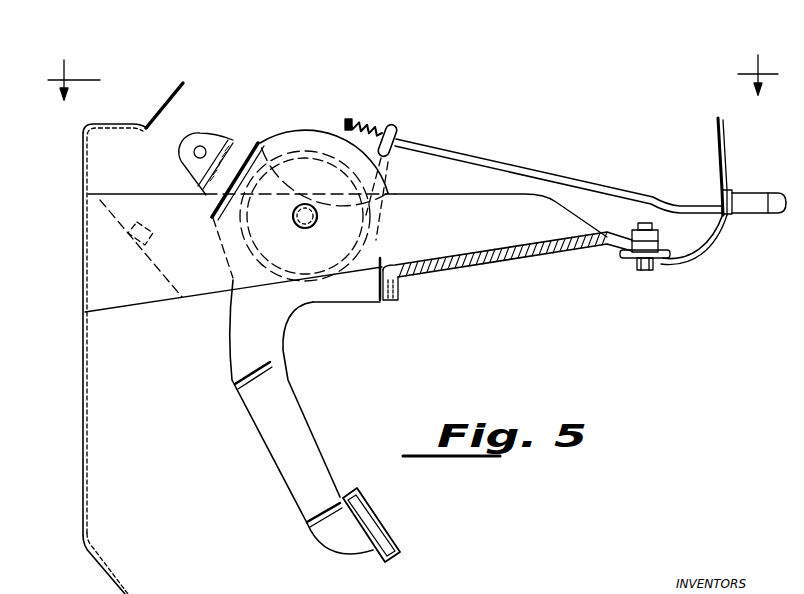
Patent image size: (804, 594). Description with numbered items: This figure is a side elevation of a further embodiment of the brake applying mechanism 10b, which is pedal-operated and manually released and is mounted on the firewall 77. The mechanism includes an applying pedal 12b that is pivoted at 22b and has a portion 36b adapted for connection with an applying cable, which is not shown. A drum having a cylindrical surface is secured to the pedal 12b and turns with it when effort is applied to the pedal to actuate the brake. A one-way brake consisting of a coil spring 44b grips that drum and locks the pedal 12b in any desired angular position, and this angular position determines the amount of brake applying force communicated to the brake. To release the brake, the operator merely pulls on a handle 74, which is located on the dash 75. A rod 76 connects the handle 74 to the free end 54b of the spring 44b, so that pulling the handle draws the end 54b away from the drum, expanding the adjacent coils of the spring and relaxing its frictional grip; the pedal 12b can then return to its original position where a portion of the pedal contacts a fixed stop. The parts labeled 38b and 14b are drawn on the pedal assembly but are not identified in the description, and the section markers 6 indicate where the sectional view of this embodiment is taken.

The section line 6- 6 is at (411, 87).
The firewall 77 is at (88, 374).
The applying mechanism 10b is at (549, 276).
The mounting lobe with hole 38b is at (200, 146).
The portion 36b is at (231, 142).
The coil spring 44b is at (287, 158).
The pivot 22b is at (306, 205).
The free end 54b is at (387, 162).
The rod 76 is at (543, 172).
The dash 75 is at (718, 147).
The handle 74 is at (777, 208).
The applying pedal 12b is at (297, 403).
The pedal pad 14b is at (382, 527).